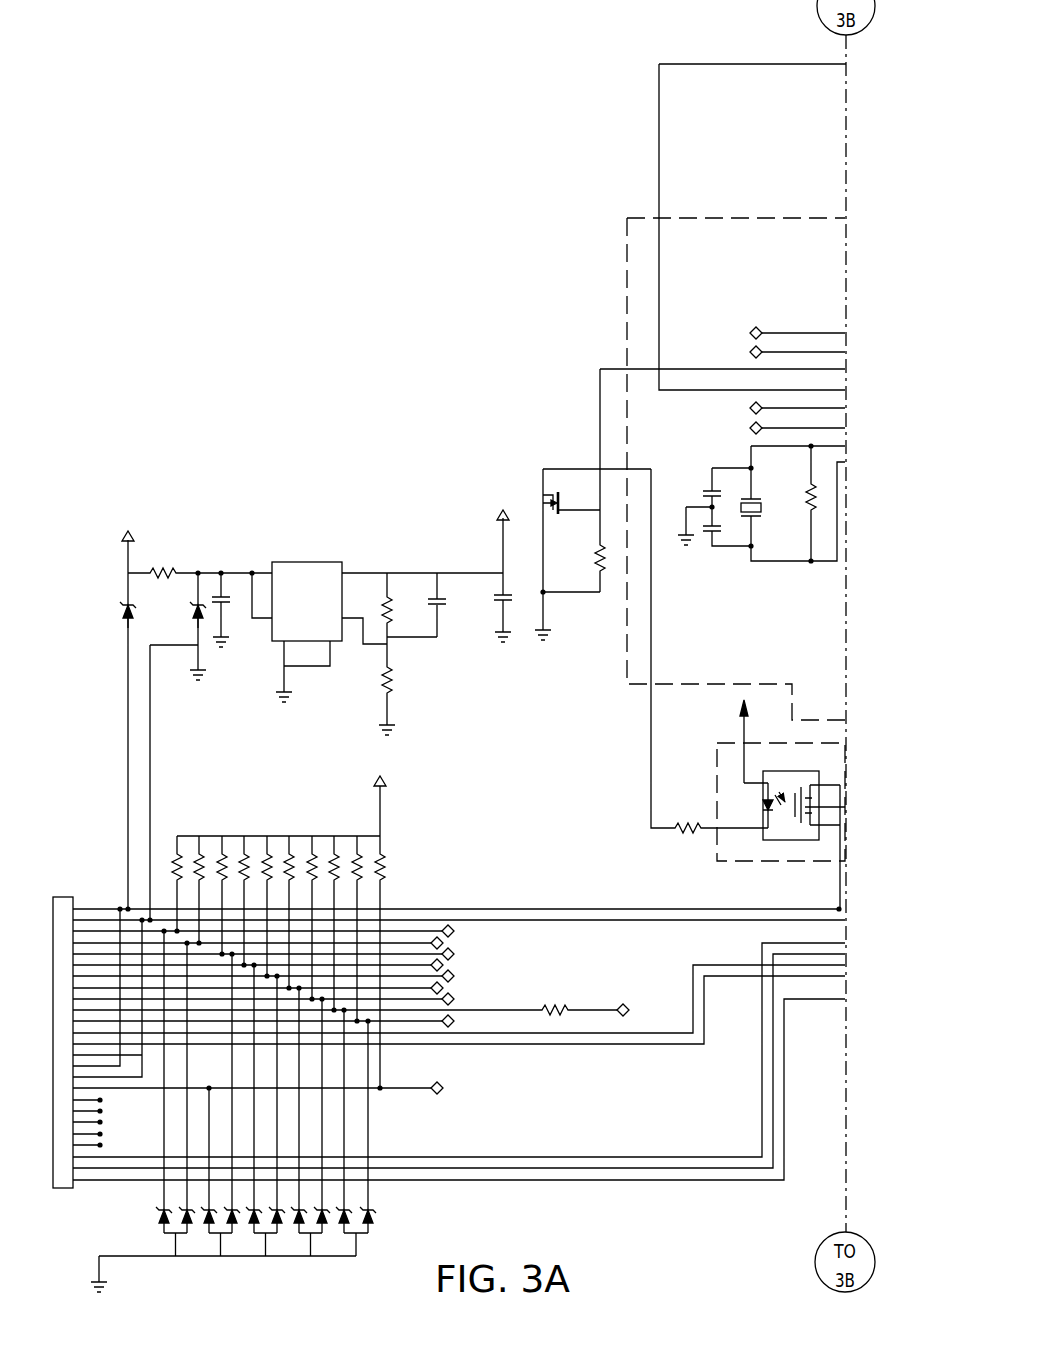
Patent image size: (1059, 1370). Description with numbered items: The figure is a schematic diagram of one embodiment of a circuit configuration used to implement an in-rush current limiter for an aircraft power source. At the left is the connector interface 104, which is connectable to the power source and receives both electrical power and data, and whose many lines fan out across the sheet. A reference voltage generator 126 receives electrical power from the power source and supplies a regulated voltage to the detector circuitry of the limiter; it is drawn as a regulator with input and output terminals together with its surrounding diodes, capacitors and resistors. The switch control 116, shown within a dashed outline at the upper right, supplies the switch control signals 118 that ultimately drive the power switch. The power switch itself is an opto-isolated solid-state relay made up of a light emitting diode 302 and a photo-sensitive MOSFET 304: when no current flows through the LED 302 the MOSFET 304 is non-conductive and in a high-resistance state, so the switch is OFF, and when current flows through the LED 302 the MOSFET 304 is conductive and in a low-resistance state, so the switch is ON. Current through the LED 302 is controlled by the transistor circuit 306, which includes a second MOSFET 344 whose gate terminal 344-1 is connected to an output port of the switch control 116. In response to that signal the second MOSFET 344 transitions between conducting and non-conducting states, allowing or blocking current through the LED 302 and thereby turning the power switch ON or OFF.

The connector interface 104 is at (73, 897).
The switch control 116 is at (754, 214).
The switch control signals 118 is at (600, 369).
The reference voltage generator 126 is at (289, 550).
The light emitting diode 302 is at (757, 801).
The photo-sensitive MOSFET 304 is at (793, 826).
The transistor circuit 306 is at (503, 467).
The second MOSFET 344 is at (533, 535).
The gate terminal 344-1 is at (575, 510).